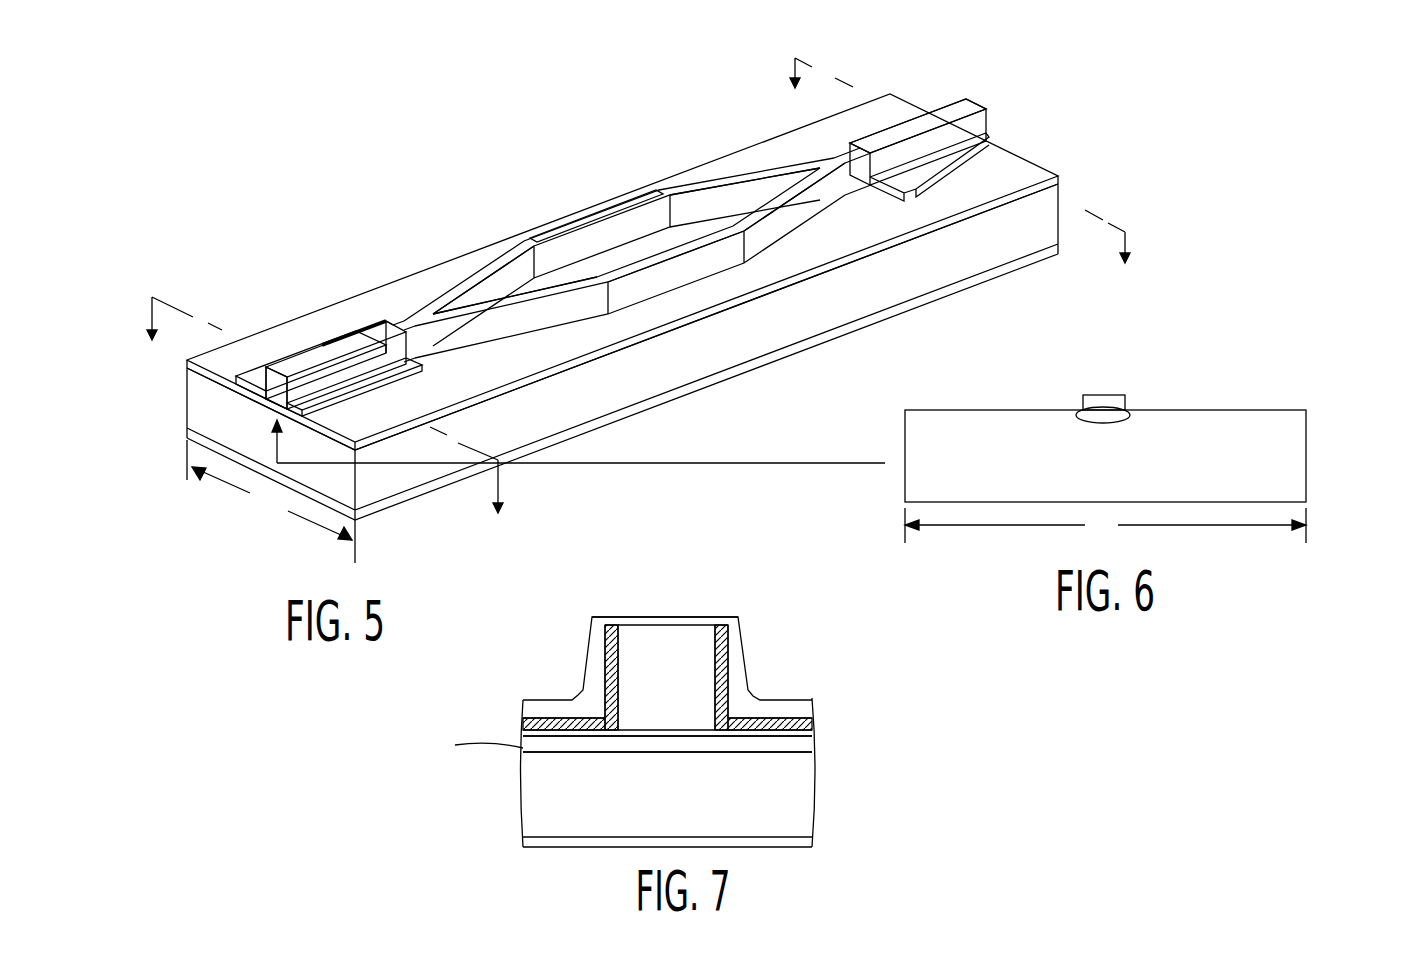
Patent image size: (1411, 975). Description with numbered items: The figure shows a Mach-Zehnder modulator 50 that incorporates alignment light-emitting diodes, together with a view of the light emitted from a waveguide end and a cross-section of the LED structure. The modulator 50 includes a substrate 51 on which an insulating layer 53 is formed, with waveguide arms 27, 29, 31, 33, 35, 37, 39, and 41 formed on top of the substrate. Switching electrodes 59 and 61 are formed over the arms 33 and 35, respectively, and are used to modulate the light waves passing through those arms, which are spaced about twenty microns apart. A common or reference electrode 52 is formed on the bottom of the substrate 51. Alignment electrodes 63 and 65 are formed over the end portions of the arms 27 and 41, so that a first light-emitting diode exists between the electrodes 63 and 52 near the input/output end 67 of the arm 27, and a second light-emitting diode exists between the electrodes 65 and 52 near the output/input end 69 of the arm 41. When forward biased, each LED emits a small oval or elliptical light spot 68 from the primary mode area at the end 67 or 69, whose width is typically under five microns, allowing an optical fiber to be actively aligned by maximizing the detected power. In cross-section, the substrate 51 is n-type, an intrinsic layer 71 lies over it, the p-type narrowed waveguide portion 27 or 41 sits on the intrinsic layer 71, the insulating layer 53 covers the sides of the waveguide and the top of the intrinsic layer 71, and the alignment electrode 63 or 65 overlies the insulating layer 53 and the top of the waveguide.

In FIG. 5, the waveguide arm 27 is at (393, 327).
In FIG. 7, the waveguide arm 27 is at (680, 668).
In FIG. 5, the waveguide arm 29 is at (495, 283).
In FIG. 5, the waveguide arm 31 is at (505, 328).
In FIG. 5, the waveguide arm 33 is at (603, 216).
In FIG. 5, the waveguide arm 35 is at (703, 235).
In FIG. 5, the waveguide arm 37 is at (768, 185).
In FIG. 5, the waveguide arm 39 is at (810, 208).
In FIG. 5, the waveguide arm 41 is at (862, 147).
In FIG. 7, the waveguide arm 41 is at (666, 671).
In FIG. 5, the Mach-Zehnder modulator 50 is at (818, 44).
In FIG. 5, the substrate 51 is at (850, 302).
In FIG. 6, the substrate 51 is at (1290, 468).
In FIG. 7, the substrate 51 is at (795, 812).
In FIG. 5, the common electrode 52 is at (1013, 270).
In FIG. 7, the common electrode 52 is at (812, 838).
In FIG. 5, the insulating layer 53 is at (1010, 180).
In FIG. 7, the insulating layer 53 is at (812, 723).
In FIG. 5, the switching electrode 59 is at (561, 232).
In FIG. 5, the switching electrode 61 is at (767, 295).
In FIG. 5, the alignment electrode 63 is at (303, 356).
In FIG. 7, the alignment electrode 63 is at (738, 617).
In FIG. 5, the alignment electrode 65 is at (985, 130).
In FIG. 5, the input/output end 67 is at (278, 388).
In FIG. 6, the input/output end 67 is at (1105, 395).
In FIG. 6, the light spot 68 is at (1103, 425).
In FIG. 5, the output/input end 69 is at (985, 103).
In FIG. 7, the intrinsic layer 71 is at (812, 742).